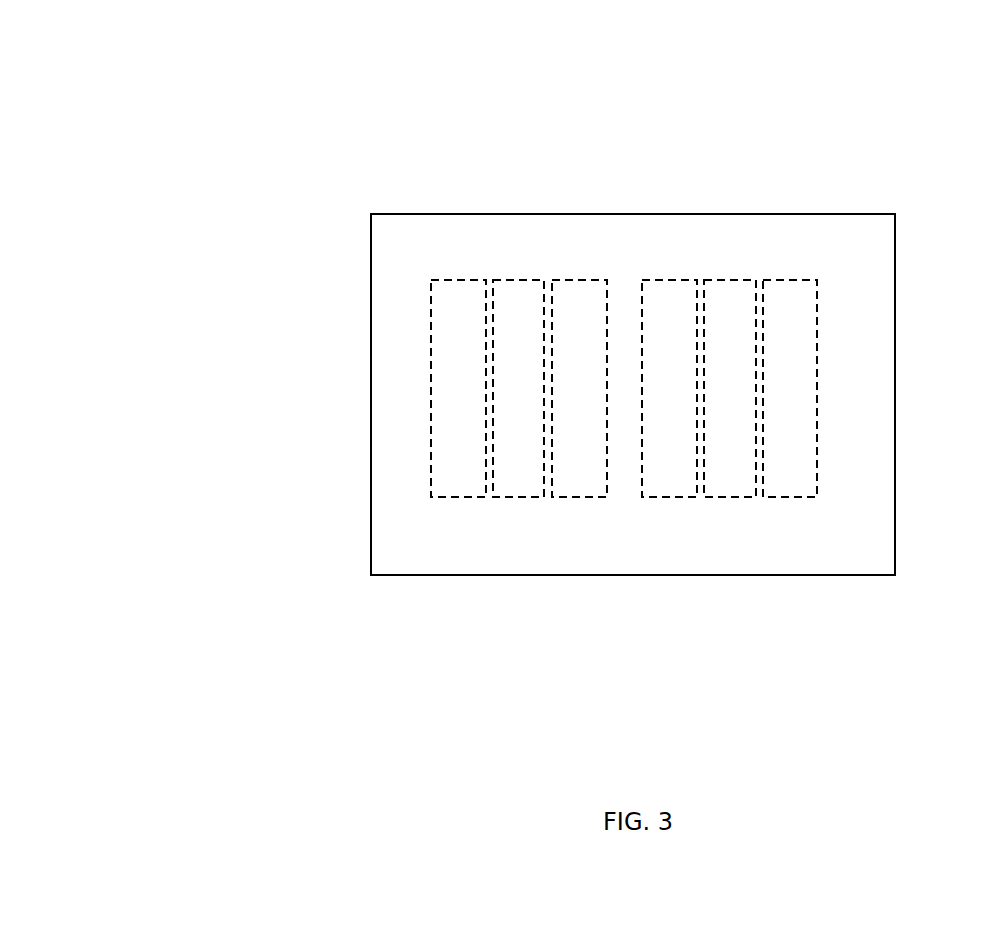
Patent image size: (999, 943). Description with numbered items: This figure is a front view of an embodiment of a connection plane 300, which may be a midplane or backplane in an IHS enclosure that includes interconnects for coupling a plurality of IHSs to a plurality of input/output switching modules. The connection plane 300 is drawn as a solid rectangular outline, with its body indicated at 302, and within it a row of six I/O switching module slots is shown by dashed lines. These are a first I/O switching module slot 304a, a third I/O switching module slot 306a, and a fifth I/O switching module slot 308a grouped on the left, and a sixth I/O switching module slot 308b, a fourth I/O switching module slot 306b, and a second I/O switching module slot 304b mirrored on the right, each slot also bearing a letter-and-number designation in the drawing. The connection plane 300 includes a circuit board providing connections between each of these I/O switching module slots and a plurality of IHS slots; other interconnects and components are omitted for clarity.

The connection plane 300 is at (143, 104).
The substrate / die region 302 is at (895, 214).
The first I/O switching module slot 304a is at (458, 280).
The second I/O switching module slot 304b is at (790, 280).
The third I/O switching module slot 306a is at (522, 280).
The fourth I/O switching module slot 306b is at (732, 280).
The fifth I/O switching module slot 308a is at (580, 280).
The sixth I/O switching module slot 308b is at (670, 280).